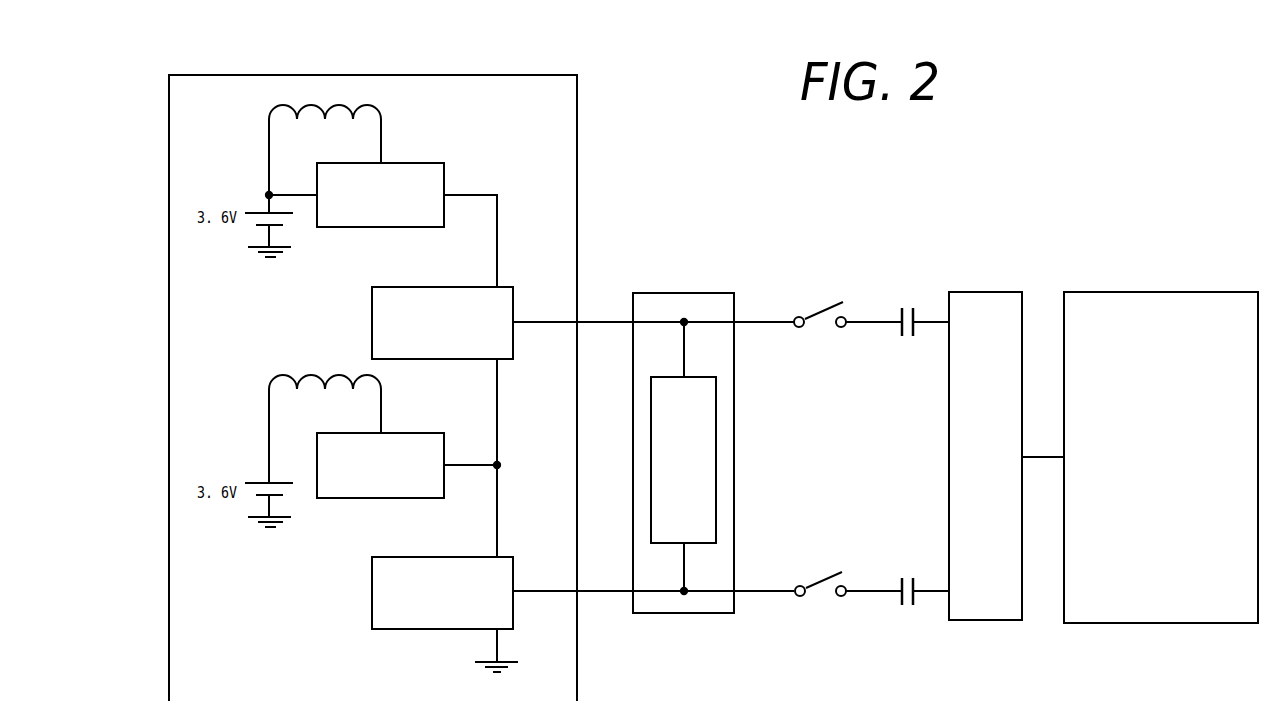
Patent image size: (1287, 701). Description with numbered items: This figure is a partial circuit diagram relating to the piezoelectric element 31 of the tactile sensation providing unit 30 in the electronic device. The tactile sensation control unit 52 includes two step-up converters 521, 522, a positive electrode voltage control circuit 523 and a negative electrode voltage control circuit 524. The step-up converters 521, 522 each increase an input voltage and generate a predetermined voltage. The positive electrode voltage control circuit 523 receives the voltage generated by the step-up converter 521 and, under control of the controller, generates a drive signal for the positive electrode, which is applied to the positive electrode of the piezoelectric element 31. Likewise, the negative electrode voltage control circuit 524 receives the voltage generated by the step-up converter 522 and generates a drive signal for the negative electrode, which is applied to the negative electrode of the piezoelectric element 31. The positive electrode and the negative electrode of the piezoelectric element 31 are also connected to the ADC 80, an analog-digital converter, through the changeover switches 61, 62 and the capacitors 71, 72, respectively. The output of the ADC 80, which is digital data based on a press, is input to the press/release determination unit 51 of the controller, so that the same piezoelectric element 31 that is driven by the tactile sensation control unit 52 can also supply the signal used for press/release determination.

The tactile sensation control unit 52 is at (368, 75).
The step-up converter 521 is at (410, 161).
The step-up converter 522 is at (369, 499).
The positive electrode voltage control circuit 523 is at (372, 322).
The negative electrode voltage control circuit 524 is at (372, 593).
The tactile sensation providing unit 30 is at (685, 292).
The piezoelectric element 31 is at (701, 377).
The changeover switch 61 is at (822, 328).
The changeover switch 62 is at (822, 597).
The capacitor 71 is at (905, 306).
The capacitor 72 is at (904, 577).
The ADC 80 is at (983, 290).
The press/release determination unit 51 is at (1158, 290).